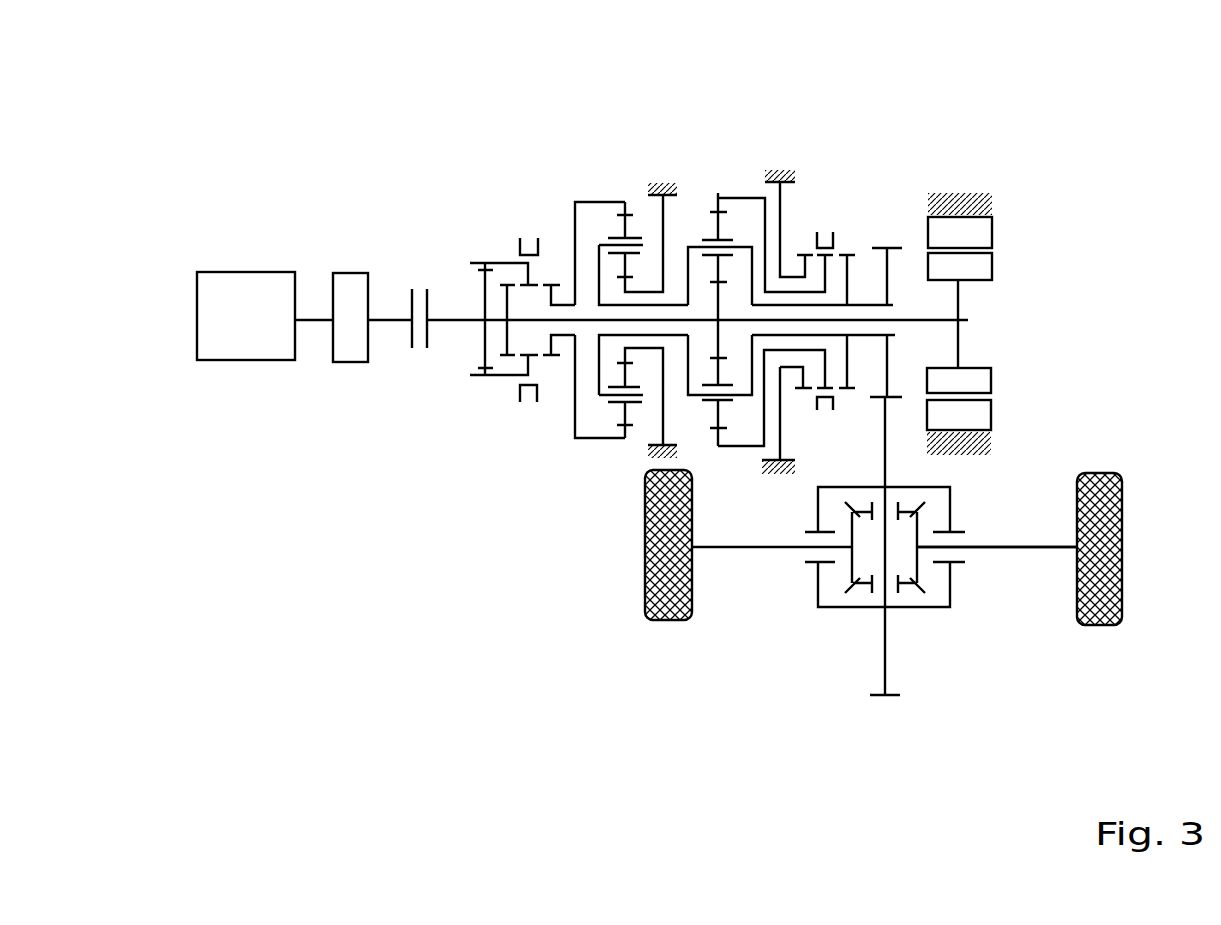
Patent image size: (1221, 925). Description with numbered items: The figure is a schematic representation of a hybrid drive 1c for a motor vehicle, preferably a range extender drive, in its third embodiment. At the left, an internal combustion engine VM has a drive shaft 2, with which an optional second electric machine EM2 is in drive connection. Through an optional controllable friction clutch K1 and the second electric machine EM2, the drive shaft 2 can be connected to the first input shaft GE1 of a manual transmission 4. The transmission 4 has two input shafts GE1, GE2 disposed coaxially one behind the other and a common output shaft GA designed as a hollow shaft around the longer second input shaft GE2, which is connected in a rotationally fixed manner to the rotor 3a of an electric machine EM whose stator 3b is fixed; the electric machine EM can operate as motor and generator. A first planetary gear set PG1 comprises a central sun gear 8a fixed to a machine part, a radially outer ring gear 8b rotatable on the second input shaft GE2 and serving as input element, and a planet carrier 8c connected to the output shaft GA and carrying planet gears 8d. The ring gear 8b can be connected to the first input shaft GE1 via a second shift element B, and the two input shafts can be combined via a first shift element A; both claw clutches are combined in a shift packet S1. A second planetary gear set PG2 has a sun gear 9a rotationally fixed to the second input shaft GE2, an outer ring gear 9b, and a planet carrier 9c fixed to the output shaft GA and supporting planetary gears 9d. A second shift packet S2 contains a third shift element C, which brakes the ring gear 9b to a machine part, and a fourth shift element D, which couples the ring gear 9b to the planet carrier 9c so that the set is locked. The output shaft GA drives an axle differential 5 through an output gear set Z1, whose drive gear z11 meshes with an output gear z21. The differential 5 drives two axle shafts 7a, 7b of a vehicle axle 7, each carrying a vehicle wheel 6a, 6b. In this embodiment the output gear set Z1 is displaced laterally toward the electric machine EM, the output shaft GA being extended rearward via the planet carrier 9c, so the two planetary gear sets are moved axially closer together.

The hybrid drive 1c is at (205, 130).
The drive shaft 2 is at (313, 316).
The friction clutch K1 is at (410, 295).
The first input shaft GE1 is at (450, 316).
The manual transmission 4 is at (562, 142).
The first planetary gear set PG1 is at (593, 399).
The sun gear 8a is at (642, 350).
The ring gear 8b is at (618, 226).
The planet carrier 8c is at (603, 397).
The planet gears 8d is at (602, 200).
The second planetary gear set PG2 is at (765, 401).
The sun gear 9a is at (718, 337).
The ring gear 9b is at (743, 198).
The planet carrier 9c is at (753, 267).
The planetary gears 9d is at (718, 226).
The first shift element A is at (507, 278).
The second shift element B is at (559, 278).
The third shift element C is at (787, 322).
The fourth shift element D is at (847, 295).
The shift packet S1 is at (505, 339).
The second shift packet S2 is at (824, 344).
The output shaft GA is at (858, 300).
The drive gear z11 is at (895, 247).
The output gear z21 is at (893, 698).
The output gear set Z1 is at (883, 773).
The rotor 3a is at (992, 263).
The stator 3b is at (992, 233).
The second input shaft GE2 is at (928, 323).
The electric machine EM is at (1000, 398).
The second electric machine EM2 is at (350, 363).
The internal combustion engine VM is at (235, 363).
The axle differential 5 is at (843, 607).
The vehicle wheel 6a is at (663, 620).
The vehicle wheel 6b is at (1122, 490).
The vehicle axle 7 is at (1062, 552).
The axle shaft 7a is at (732, 547).
The axle shaft 7b is at (1003, 550).